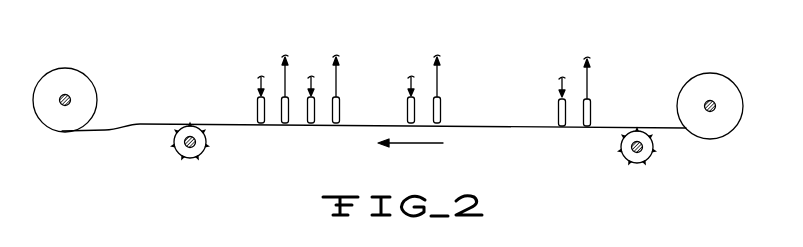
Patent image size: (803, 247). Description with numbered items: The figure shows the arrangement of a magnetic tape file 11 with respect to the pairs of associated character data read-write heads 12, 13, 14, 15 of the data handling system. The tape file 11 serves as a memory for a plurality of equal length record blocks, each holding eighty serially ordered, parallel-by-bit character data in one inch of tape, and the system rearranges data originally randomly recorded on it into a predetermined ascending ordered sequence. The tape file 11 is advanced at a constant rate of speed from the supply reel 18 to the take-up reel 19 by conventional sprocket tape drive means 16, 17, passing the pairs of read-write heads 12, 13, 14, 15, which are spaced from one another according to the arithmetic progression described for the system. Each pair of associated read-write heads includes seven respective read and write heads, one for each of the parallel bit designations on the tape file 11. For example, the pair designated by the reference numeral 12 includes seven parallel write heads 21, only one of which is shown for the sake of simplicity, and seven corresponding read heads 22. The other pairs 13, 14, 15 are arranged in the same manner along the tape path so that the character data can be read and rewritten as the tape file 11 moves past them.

The magnetic tape file 11 is at (507, 128).
The pair of associated character data read-write heads 12 is at (248, 62).
The pair of associated character data read-write heads 13 is at (300, 45).
The pair of associated character data read-write heads 14 is at (398, 62).
The pair of associated character data read-write heads 15 is at (549, 65).
The sprocket tape drive means 16 is at (199, 156).
The sprocket tape drive means 17 is at (646, 161).
The supply reel 18 is at (694, 74).
The take-up reel 19 is at (85, 74).
The write head 21 is at (257, 108).
The read head 22 is at (283, 121).